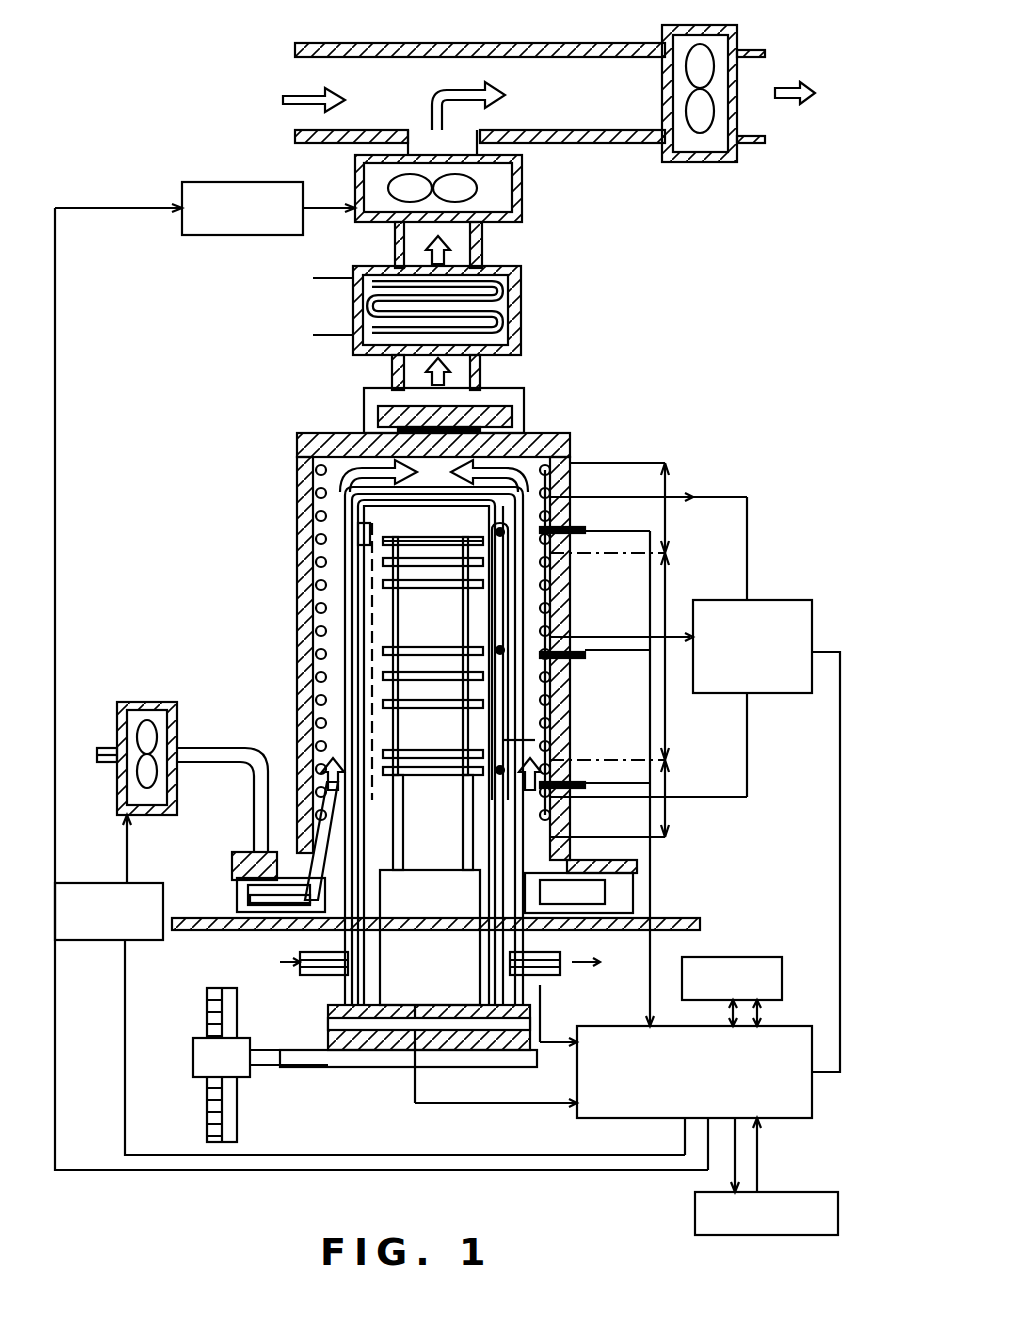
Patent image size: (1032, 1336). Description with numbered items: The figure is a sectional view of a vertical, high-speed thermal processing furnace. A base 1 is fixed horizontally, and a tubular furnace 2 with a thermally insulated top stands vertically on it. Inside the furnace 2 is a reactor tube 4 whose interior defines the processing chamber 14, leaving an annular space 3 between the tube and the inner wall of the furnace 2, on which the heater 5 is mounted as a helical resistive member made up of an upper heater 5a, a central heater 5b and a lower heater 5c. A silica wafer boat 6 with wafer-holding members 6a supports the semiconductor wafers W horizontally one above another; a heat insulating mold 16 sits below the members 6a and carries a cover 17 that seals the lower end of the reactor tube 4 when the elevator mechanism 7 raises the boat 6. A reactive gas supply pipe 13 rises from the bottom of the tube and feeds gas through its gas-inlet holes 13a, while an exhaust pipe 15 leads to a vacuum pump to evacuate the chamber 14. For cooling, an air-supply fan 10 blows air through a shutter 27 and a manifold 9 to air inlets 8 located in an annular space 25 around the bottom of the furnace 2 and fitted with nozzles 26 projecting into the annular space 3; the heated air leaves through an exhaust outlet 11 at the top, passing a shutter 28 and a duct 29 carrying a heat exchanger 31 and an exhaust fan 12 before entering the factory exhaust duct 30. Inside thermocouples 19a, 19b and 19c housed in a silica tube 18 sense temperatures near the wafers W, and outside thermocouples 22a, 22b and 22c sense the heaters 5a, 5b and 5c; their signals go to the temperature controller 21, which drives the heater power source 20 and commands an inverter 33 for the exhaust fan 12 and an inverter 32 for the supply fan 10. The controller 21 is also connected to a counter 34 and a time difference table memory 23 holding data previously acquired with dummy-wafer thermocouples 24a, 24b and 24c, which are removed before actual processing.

The base 1 is at (670, 918).
The tubular furnace 2 is at (570, 433).
The annular space 3 is at (345, 487).
The reactor tube 4 is at (358, 530).
The heater 5 is at (531, 650).
The upper heater 5a is at (684, 508).
The central heater 5b is at (682, 656).
The lower heater 5c is at (680, 798).
The wafer boat 6 is at (429, 656).
The wafer-holding members 6a is at (540, 740).
The elevator mechanism 7 is at (193, 1070).
The air inlets 8 is at (310, 870).
The manifold 9 is at (237, 895).
The air-supply fan 10 is at (147, 702).
The exhaust outlet 11 is at (400, 440).
The exhaust fan 12 is at (500, 188).
The reactive gas supply pipe 13 is at (310, 980).
The gas-inlet holes 13a is at (300, 730).
The processing chamber 14 is at (372, 610).
The exhaust pipe 15 is at (560, 975).
The heat insulating mold 16 is at (442, 1040).
The cover 17 is at (360, 1030).
The silica tube 18 is at (555, 582).
The inside upper thermocouple 19a is at (500, 532).
The inside central thermocouple 19b is at (500, 650).
The inside lower thermocouple 19c is at (500, 770).
The heater power source 20 is at (812, 612).
The temperature controller 21 is at (770, 1118).
The outside thermocouple 22a is at (580, 527).
The outside thermocouple 22b is at (585, 658).
The outside thermocouple 22c is at (585, 790).
The time difference table memory 23 is at (742, 957).
The thermocouple 24a is at (440, 545).
The thermocouple 24b is at (440, 652).
The thermocouple 24c is at (445, 752).
The annular space 25 is at (265, 905).
The nozzles 26 is at (520, 850).
The shutter 27 is at (232, 860).
The shutter 28 is at (482, 382).
The duct 29 is at (482, 246).
The exhaust duct 30 is at (508, 40).
The heat exchanger 31 is at (508, 304).
The inverter 32 is at (80, 940).
The inverter 33 is at (228, 235).
The counter 34 is at (838, 1205).
The semiconductor wafers W is at (455, 540).